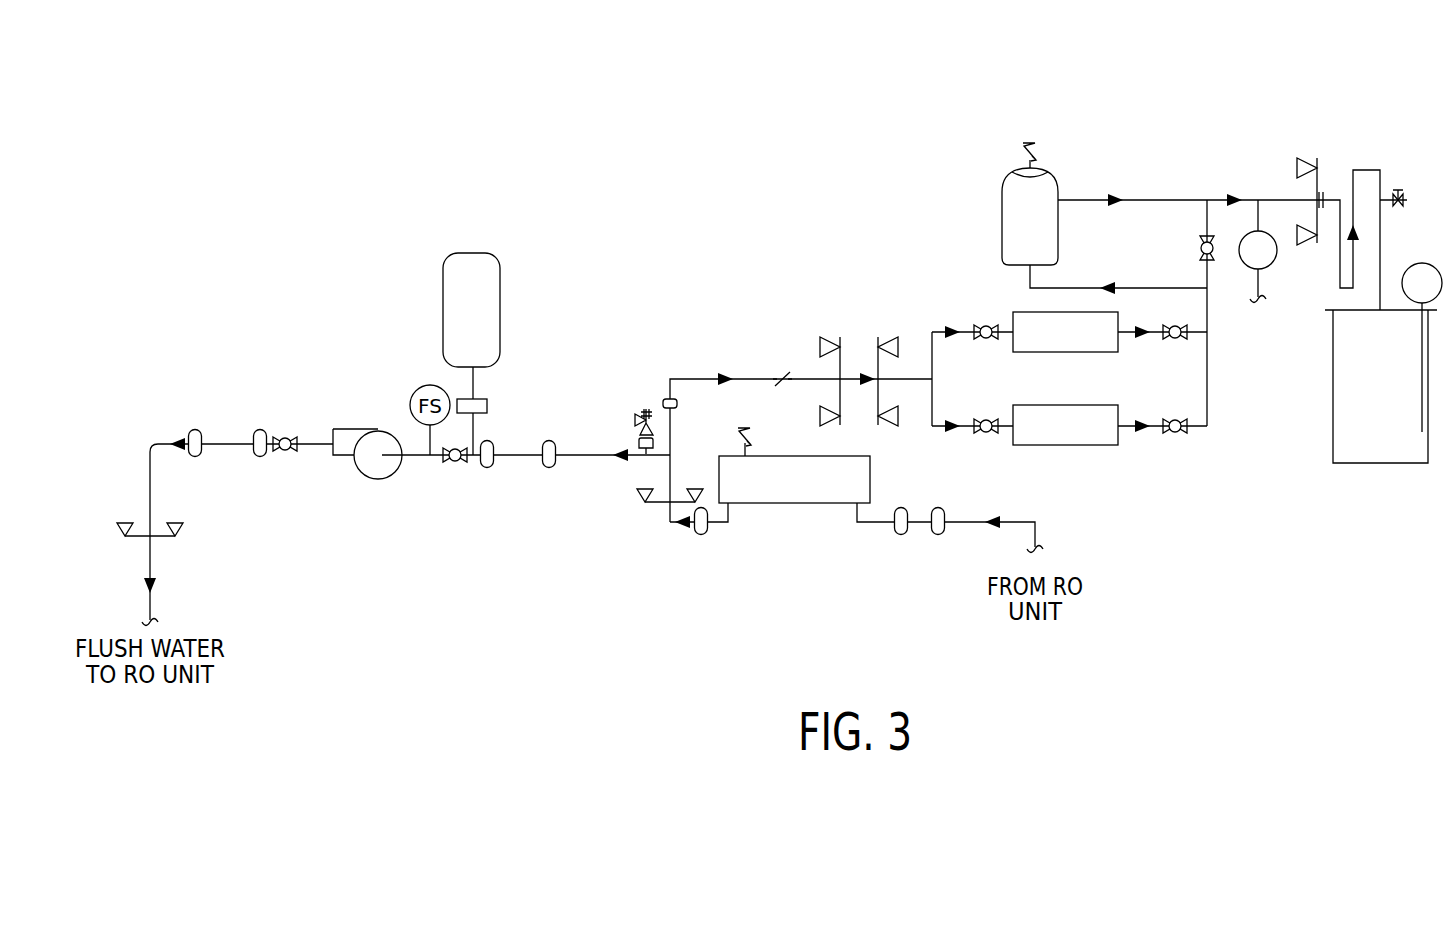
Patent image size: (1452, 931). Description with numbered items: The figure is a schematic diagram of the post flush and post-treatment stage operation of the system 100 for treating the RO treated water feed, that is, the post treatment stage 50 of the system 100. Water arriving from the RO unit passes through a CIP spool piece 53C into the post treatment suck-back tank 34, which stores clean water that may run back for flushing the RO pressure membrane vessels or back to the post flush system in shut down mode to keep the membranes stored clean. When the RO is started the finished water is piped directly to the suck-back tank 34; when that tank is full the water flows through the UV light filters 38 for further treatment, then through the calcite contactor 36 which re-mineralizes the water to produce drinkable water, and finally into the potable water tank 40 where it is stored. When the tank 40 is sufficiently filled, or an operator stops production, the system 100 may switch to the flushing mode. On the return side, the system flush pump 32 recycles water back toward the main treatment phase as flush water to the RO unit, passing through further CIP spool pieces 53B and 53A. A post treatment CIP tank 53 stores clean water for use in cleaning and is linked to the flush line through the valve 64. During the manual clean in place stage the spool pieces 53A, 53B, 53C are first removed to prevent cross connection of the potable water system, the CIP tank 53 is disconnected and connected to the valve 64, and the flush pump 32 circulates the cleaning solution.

The post treatment stage 50 is at (385, 120).
The system 100 is at (712, 109).
The system flush pump 32 is at (378, 430).
The post treatment suck-back tank 34 is at (795, 497).
The calcite contactor 36 is at (1000, 213).
The UV light filters 38 is at (1063, 356).
The potable water tank 40 is at (1340, 443).
The post treatment CIP tank 53 is at (443, 278).
The CIP spool piece 53A is at (195, 457).
The CIP spool piece 53B is at (487, 468).
The CIP spool piece 53C is at (938, 535).
The valve 64 is at (487, 406).